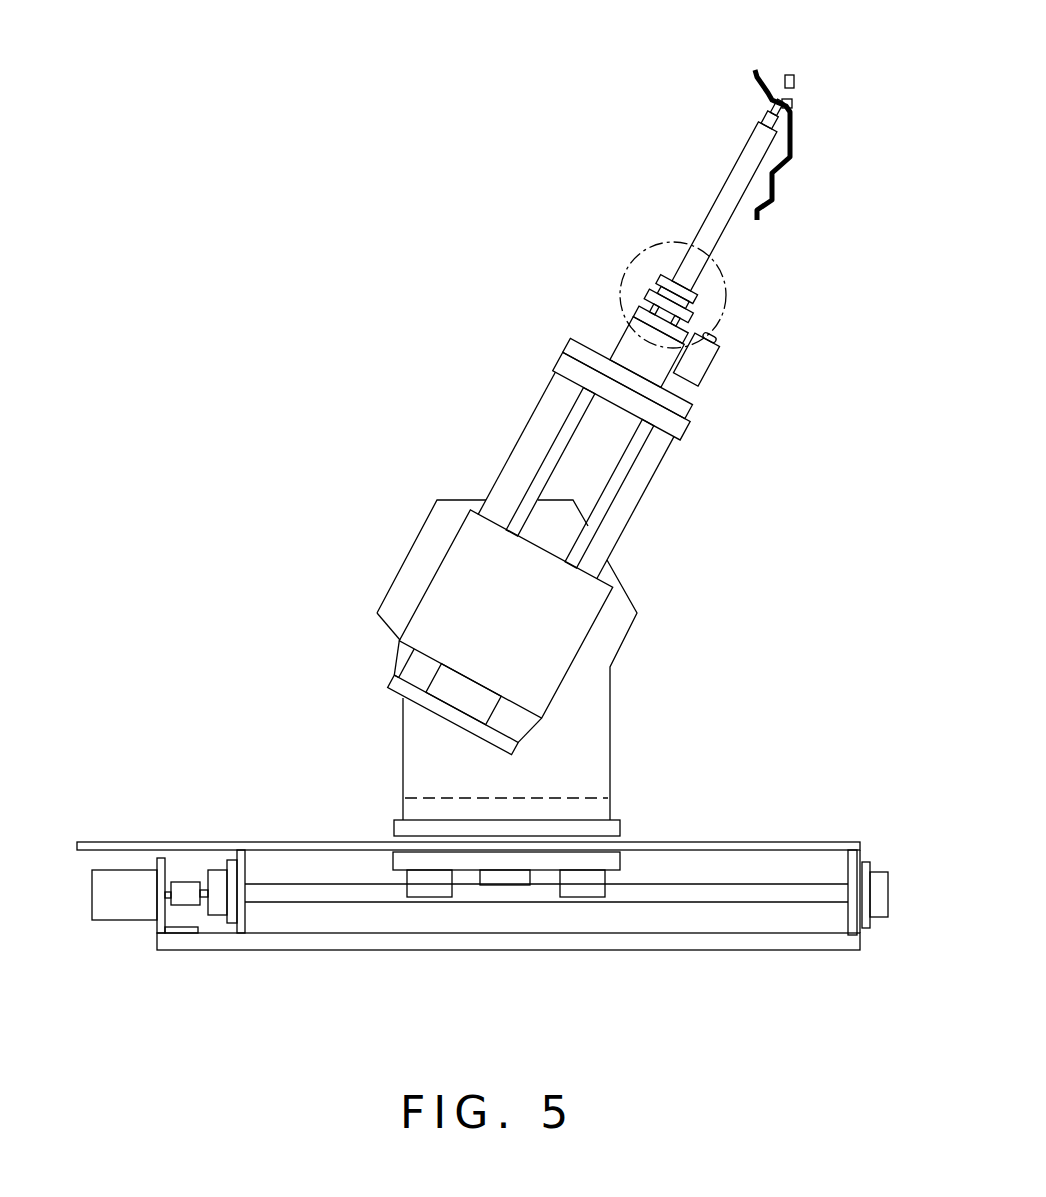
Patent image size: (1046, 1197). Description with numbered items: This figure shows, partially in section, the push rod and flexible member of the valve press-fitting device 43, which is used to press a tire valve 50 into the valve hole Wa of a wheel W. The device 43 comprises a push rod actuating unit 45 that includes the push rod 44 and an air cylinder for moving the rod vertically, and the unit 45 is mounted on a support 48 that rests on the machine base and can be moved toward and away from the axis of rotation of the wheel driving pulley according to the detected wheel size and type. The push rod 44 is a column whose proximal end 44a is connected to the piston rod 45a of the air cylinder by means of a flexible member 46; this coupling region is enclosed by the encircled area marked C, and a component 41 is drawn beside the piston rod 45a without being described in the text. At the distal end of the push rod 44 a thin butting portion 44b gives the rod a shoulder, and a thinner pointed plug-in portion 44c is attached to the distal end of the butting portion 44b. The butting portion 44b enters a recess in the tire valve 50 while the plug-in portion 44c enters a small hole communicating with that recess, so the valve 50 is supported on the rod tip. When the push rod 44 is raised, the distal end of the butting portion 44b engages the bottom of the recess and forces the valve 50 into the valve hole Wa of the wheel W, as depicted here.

The wheel W is at (753, 63).
The valve hole Wa is at (793, 103).
The tire valve 50 is at (796, 88).
The push rod 44 is at (723, 193).
The proximal end 44a is at (706, 269).
The butting portion 44b is at (757, 116).
The plug-in portion 44c is at (773, 110).
The detail circle C is at (643, 250).
The piston rod 45a is at (621, 341).
The flexible member 46 is at (694, 308).
The sensor block 41 is at (700, 367).
The valve press-fitting device 43 is at (396, 543).
The push rod actuating unit 45 is at (577, 625).
The support 48 is at (597, 738).